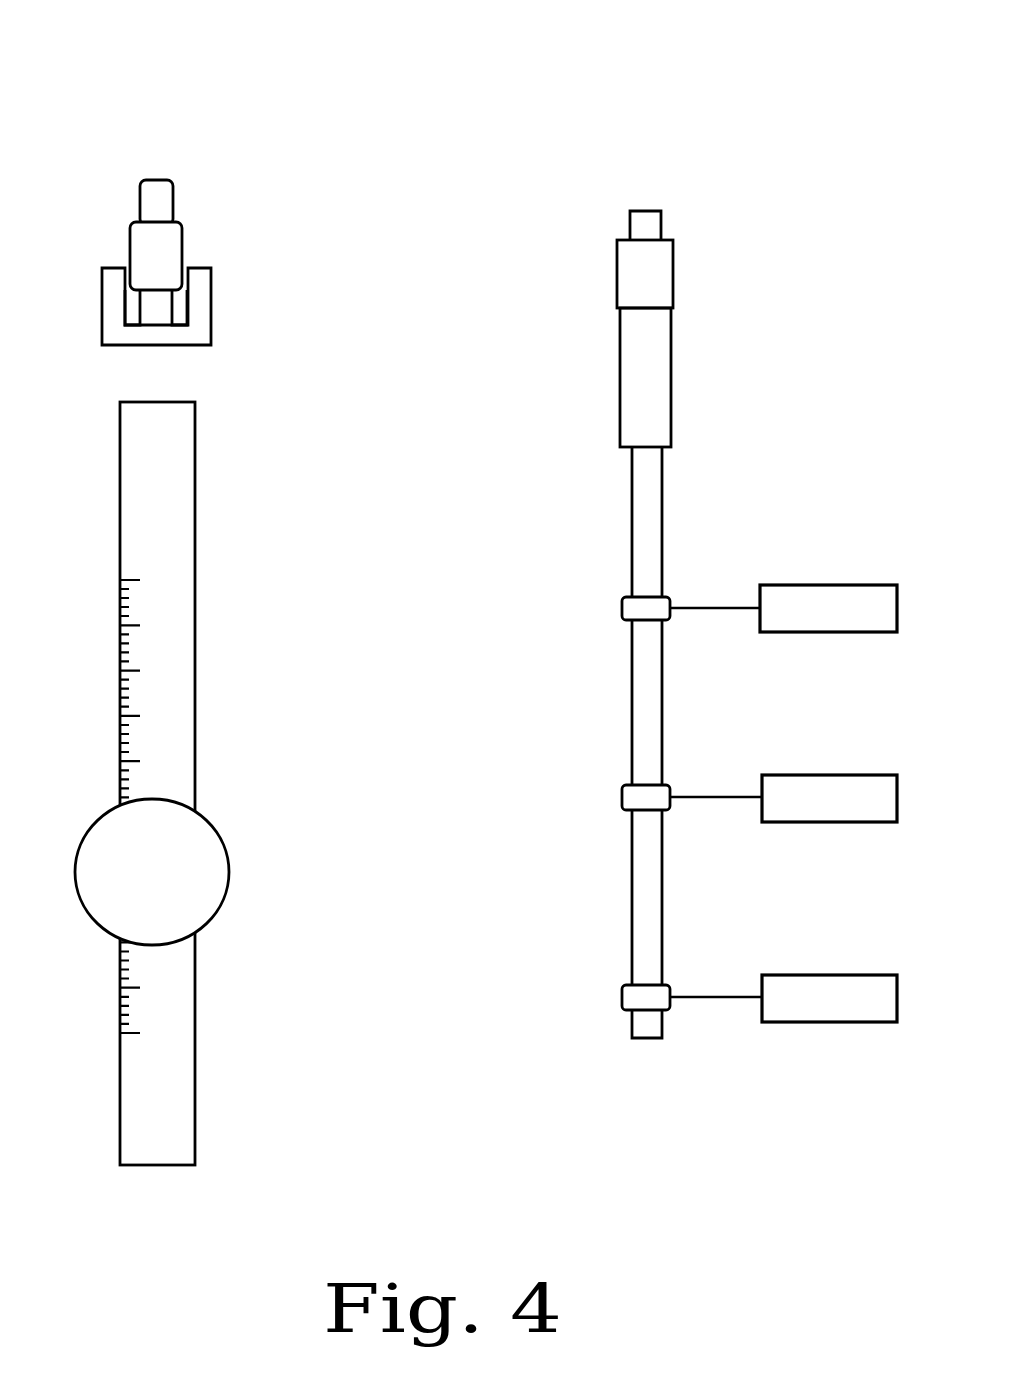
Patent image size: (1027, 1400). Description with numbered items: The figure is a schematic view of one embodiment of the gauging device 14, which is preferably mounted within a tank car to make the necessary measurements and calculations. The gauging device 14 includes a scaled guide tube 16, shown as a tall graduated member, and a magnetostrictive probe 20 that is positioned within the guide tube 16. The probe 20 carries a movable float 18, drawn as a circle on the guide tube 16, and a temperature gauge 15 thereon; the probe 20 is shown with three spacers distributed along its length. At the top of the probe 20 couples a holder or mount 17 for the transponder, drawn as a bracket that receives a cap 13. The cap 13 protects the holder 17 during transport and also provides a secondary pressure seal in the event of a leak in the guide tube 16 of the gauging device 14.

The cap 13 is at (174, 198).
The gauging device 14 is at (585, 103).
The temperature gauge 15 is at (663, 915).
The guide tube 16 is at (197, 445).
The holder or mount 17 is at (102, 314).
The float 18 is at (230, 876).
The probe 20 is at (708, 371).